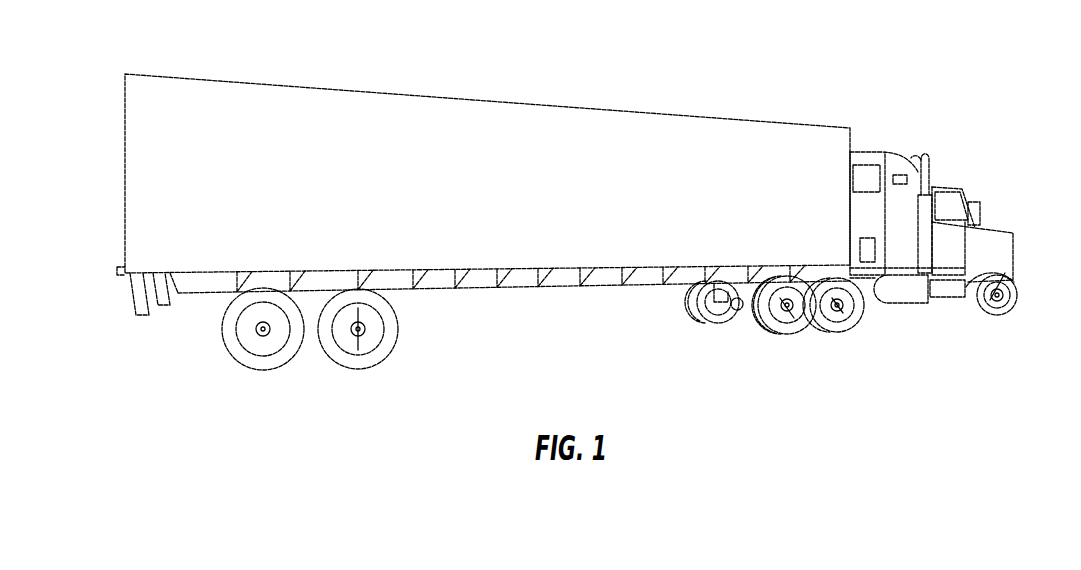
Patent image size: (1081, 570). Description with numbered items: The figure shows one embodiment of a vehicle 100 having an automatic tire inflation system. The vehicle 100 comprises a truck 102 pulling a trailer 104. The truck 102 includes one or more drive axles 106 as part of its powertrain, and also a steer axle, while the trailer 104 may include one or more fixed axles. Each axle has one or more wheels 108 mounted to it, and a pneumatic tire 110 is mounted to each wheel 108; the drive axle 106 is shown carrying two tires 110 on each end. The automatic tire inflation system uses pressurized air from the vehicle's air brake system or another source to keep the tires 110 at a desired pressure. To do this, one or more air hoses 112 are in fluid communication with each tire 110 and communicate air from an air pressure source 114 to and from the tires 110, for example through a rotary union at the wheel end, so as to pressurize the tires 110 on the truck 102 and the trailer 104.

The vehicle 100 is at (860, 52).
The truck 102 is at (864, 152).
The trailer 104 is at (490, 101).
The drive axle 106 is at (735, 320).
The wheel 108 is at (243, 349).
The tire 110 is at (262, 372).
The air hose 112 is at (263, 329).
The air pressure source 114 is at (947, 296).